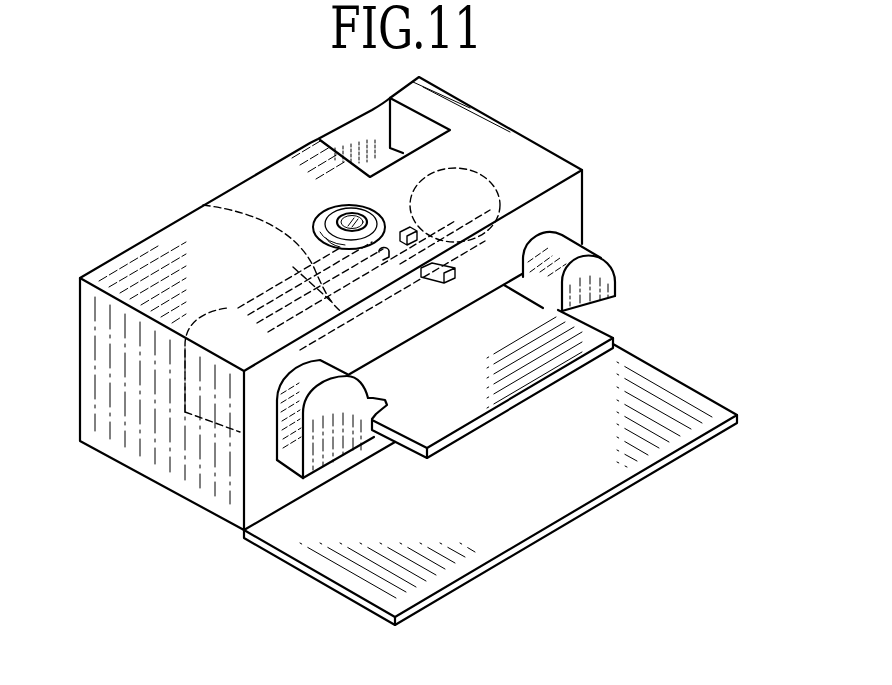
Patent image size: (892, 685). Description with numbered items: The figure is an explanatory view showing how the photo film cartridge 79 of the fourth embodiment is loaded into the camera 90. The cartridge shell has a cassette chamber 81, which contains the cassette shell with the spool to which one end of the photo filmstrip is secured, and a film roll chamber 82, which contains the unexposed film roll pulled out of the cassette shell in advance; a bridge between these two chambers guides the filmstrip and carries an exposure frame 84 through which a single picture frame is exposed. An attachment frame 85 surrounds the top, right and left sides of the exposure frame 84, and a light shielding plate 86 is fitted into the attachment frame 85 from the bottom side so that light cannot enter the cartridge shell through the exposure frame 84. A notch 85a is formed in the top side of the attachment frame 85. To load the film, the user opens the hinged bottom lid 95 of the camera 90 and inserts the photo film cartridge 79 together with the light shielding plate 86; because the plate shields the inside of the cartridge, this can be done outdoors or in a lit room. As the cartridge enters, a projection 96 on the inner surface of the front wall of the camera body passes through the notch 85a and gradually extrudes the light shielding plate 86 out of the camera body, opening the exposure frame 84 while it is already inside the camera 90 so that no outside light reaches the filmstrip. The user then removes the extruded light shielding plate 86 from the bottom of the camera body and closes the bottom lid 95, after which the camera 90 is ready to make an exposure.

The photo film cartridge 79 is at (291, 479).
The cassette chamber 81 is at (237, 430).
The film roll chamber 82 is at (600, 263).
The exposure frame 84 is at (203, 205).
The attachment frame 85 is at (444, 236).
The notch 85a is at (336, 197).
The light shielding plate 86 is at (580, 333).
The camera 90 is at (519, 120).
The bottom lid 95 is at (567, 497).
The projection 96 is at (448, 280).